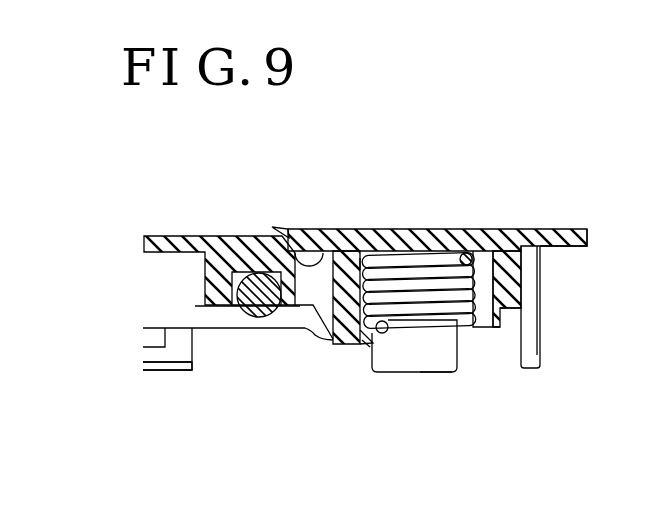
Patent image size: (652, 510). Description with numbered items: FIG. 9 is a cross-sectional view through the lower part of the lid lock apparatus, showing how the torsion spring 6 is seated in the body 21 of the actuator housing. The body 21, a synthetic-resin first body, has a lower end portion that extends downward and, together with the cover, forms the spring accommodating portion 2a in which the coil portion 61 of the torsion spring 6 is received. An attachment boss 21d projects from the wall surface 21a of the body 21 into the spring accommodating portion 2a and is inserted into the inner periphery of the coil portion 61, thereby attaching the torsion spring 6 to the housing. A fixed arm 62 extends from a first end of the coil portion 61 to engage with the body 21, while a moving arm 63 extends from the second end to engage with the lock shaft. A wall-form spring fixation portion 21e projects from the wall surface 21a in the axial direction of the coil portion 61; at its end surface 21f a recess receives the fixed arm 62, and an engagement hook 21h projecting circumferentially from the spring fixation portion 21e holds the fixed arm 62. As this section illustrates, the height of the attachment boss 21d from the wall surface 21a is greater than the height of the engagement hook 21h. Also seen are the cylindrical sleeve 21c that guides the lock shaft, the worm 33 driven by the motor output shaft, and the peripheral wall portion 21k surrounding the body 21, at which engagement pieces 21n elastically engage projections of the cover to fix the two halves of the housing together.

The body 21 is at (188, 237).
The spring accommodating portion 2a is at (487, 288).
The wall surface 21a is at (287, 237).
The cylindrical sleeve 21c is at (575, 228).
The attachment boss 21d is at (438, 365).
The spring fixation portion 21e is at (360, 267).
The end surface 21f is at (343, 347).
The engagement hook 21h is at (370, 347).
The peripheral wall portion 21k is at (505, 312).
The engagement pieces 21n is at (541, 357).
The worm 33 is at (205, 285).
The coil portion 61 is at (412, 263).
The fixed arm 62 is at (382, 334).
The moving arm 63 is at (468, 252).
The torsion spring 6 is at (483, 327).